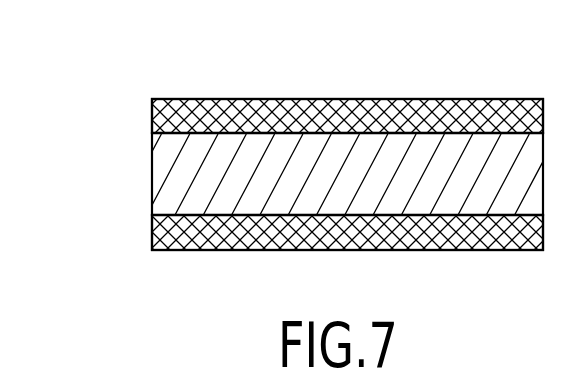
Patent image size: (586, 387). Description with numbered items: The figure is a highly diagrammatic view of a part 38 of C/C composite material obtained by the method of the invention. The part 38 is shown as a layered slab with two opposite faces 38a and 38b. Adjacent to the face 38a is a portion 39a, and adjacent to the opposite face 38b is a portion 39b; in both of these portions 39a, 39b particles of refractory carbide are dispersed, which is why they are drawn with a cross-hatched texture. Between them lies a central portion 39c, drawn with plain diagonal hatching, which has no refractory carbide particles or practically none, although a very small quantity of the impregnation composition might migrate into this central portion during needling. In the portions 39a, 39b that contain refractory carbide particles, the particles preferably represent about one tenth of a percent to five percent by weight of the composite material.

The part 38 is at (309, 188).
The face 38a is at (345, 98).
The face 38b is at (427, 252).
The portion 39a is at (403, 105).
The portion 39b is at (215, 236).
The central portion 39c is at (168, 172).